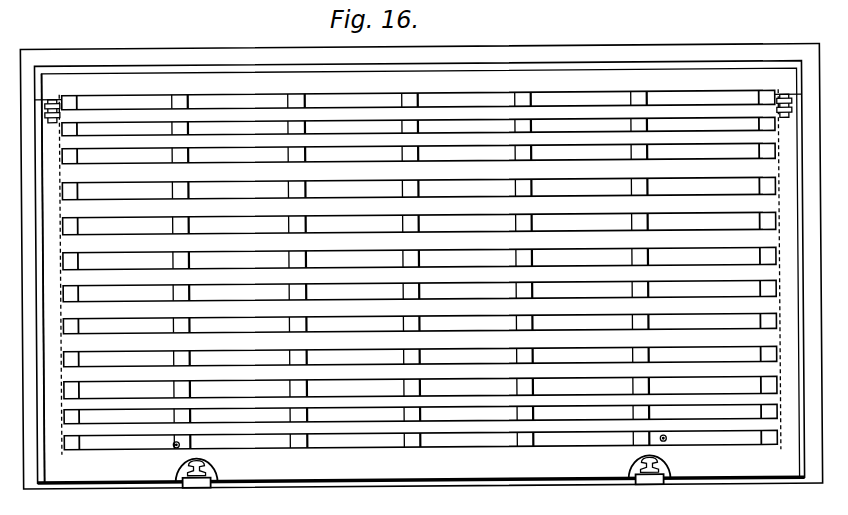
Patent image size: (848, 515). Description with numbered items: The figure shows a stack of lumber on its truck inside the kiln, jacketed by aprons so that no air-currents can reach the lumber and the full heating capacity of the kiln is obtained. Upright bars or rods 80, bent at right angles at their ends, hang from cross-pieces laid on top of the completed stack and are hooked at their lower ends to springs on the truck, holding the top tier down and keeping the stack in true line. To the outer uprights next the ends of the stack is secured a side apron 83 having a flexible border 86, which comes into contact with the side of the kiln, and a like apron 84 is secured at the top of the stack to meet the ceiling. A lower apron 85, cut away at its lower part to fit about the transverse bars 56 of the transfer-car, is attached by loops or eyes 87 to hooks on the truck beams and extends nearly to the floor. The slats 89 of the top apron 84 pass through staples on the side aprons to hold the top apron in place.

The transverse bar 56 is at (195, 487).
The upright bar 80 is at (74, 451).
The apron 83 is at (52, 266).
The apron 84 is at (420, 262).
The apron 85 is at (420, 468).
The flexible border 86 is at (47, 317).
The loop or eye 87 is at (178, 441).
The slat 89 is at (57, 100).